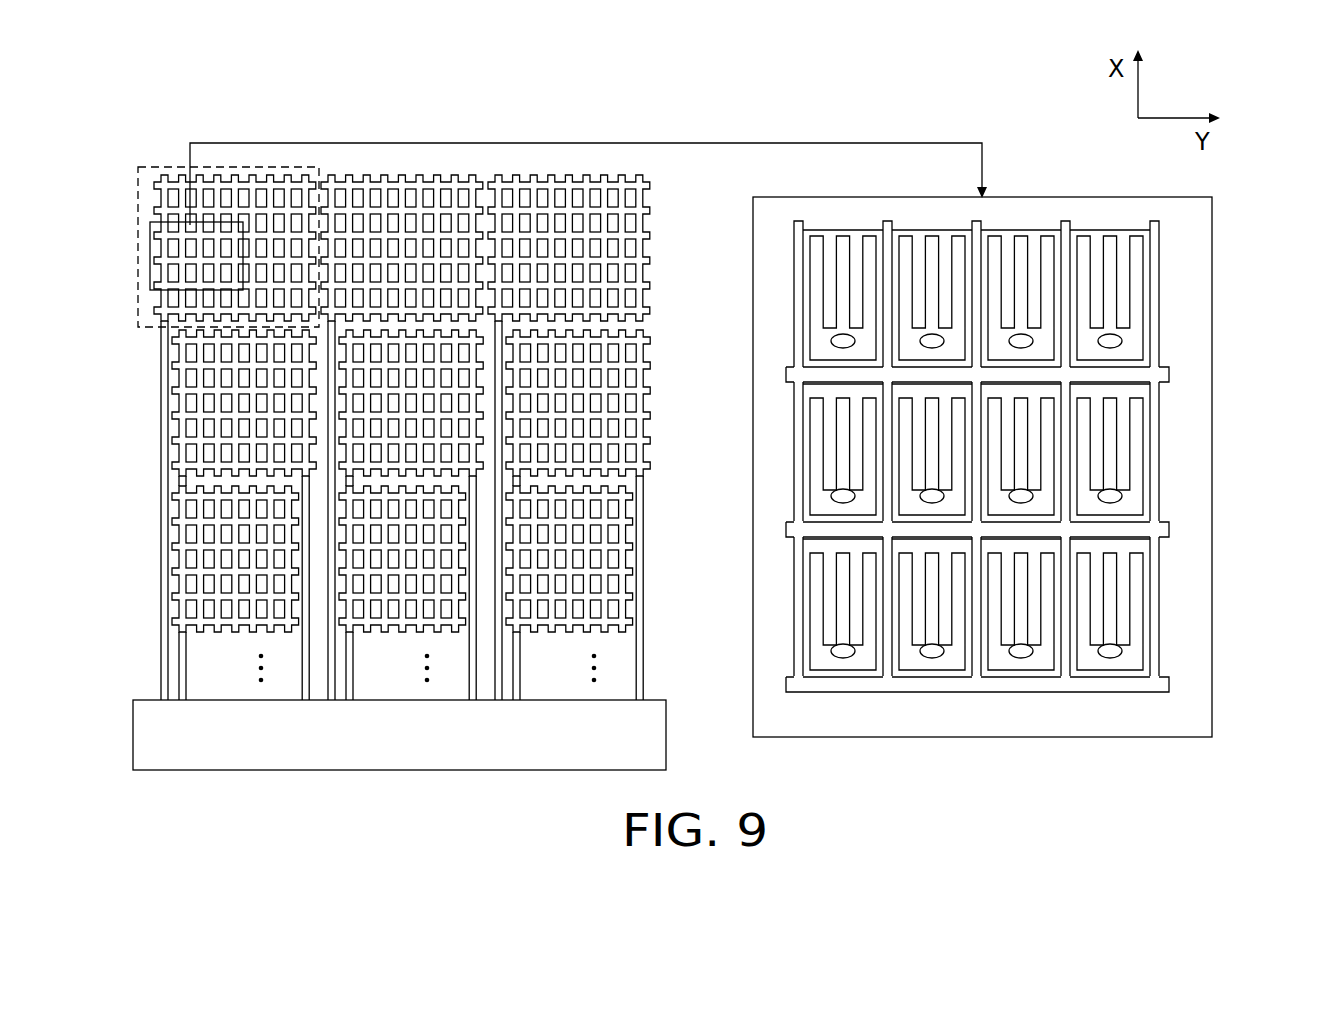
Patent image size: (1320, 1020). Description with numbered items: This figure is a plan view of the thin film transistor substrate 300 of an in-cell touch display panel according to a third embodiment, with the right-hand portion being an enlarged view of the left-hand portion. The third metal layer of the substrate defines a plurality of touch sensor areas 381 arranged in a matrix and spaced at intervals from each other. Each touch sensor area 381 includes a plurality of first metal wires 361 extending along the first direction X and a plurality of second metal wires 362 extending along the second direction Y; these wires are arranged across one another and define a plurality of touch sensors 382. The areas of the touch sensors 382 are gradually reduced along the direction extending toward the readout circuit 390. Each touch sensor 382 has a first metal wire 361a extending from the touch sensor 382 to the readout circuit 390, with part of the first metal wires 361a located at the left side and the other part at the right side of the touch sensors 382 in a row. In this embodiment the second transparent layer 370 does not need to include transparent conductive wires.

The thin film transistor substrate 300 is at (567, 111).
The first metal wires 361 is at (1161, 254).
The first metal wire 361a is at (166, 412).
The second metal wires 362 is at (1133, 375).
The second transparent layer 370 is at (1137, 585).
The touch sensor areas 381 is at (148, 248).
The touch sensors 382 is at (398, 169).
The readout circuit 390 is at (152, 700).